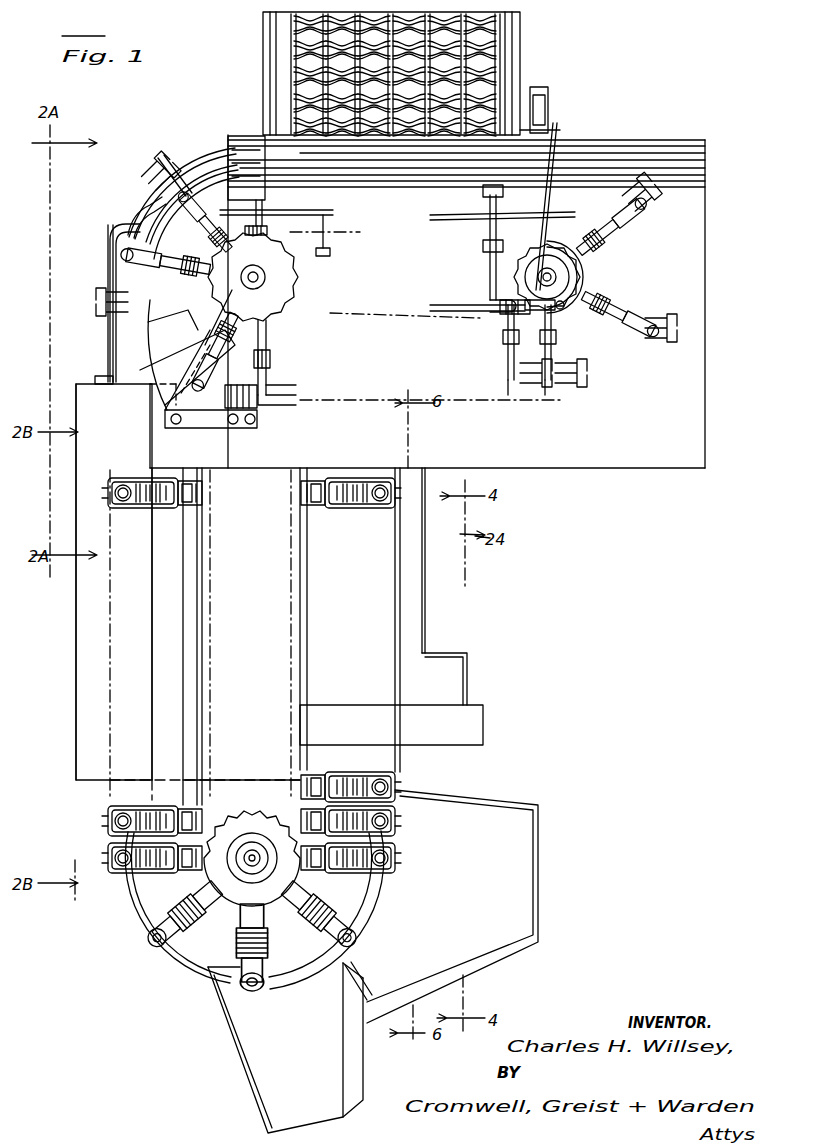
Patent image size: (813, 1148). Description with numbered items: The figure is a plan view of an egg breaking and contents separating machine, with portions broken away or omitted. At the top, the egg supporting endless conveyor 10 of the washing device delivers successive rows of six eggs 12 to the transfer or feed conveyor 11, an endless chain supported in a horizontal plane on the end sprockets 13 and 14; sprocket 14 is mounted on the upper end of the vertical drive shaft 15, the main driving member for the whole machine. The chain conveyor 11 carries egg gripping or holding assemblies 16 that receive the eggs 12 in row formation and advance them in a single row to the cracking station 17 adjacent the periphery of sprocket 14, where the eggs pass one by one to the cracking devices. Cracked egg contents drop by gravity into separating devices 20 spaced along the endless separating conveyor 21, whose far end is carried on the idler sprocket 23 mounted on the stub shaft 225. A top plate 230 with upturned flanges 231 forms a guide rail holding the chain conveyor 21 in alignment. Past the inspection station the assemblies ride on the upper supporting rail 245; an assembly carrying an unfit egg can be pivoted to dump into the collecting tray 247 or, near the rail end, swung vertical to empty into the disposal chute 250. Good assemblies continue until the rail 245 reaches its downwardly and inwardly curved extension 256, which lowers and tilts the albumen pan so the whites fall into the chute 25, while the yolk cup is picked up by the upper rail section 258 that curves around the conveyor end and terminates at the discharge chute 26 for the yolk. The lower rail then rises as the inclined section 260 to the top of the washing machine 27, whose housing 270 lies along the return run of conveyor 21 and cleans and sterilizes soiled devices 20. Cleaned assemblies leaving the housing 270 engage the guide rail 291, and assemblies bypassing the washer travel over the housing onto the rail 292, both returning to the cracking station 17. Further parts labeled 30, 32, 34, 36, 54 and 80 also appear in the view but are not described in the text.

The egg supporting endless conveyor 10 is at (500, 50).
The transfer or feed conveyor 11 is at (398, 322).
The eggs 12 is at (480, 158).
The end sprocket 13 is at (518, 282).
The end sprocket 14 is at (285, 283).
The vertical drive shaft 15 is at (262, 246).
The egg gripping or holding assemblies 16 is at (150, 190).
The cracking station 17 is at (105, 237).
The separating devices 20 is at (144, 508).
The endless separating conveyor 21 is at (210, 620).
The idler sprocket 23 is at (258, 815).
The chute 25 is at (472, 820).
The discharge chute 26 is at (250, 1030).
The washing machine 27 is at (76, 668).
The transfer rail 30 is at (490, 305).
The cam 32 is at (565, 312).
The main frame 34 is at (698, 405).
The ring 36 is at (585, 275).
The slide block 54 is at (505, 322).
The support rod 80 is at (540, 225).
The stub shaft 225 is at (250, 856).
The top plate 230 is at (262, 685).
The upturned flange 231 is at (308, 610).
The upper supporting rail 245 is at (400, 572).
The collecting tray 247 is at (420, 612).
The disposal tray or chute 250 is at (425, 715).
The curved rail extension 256 is at (350, 905).
The upper rail section 258 is at (385, 886).
The upwardly inclined rail section 260 is at (140, 918).
The washer housing 270 is at (76, 610).
The guide rail 291 is at (132, 226).
The rail 292 is at (108, 320).